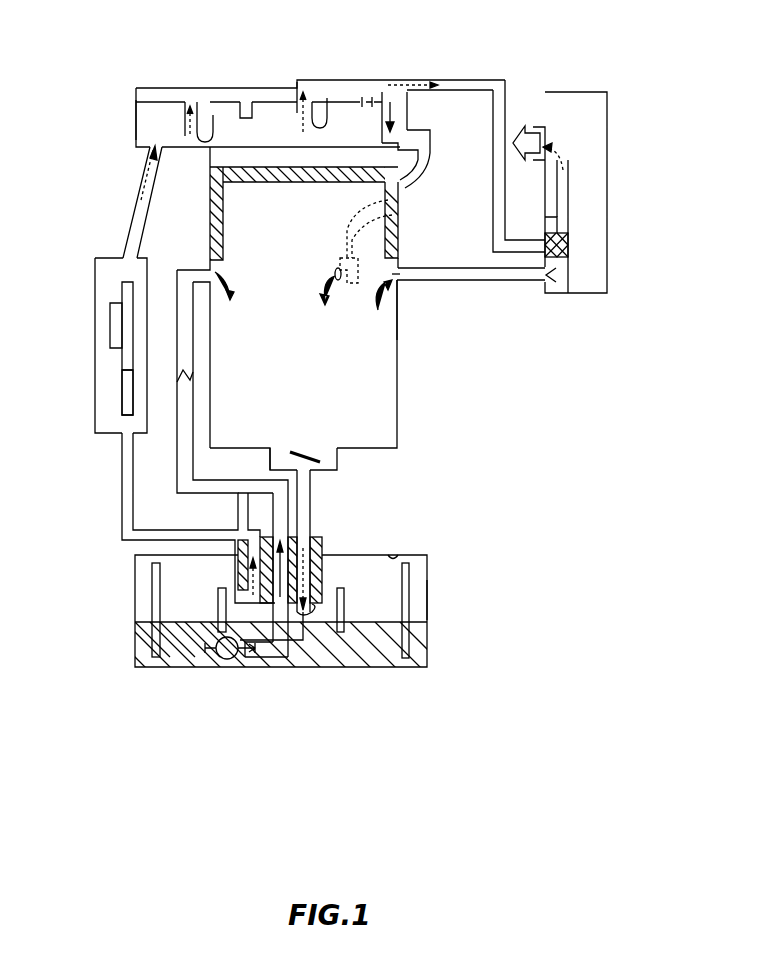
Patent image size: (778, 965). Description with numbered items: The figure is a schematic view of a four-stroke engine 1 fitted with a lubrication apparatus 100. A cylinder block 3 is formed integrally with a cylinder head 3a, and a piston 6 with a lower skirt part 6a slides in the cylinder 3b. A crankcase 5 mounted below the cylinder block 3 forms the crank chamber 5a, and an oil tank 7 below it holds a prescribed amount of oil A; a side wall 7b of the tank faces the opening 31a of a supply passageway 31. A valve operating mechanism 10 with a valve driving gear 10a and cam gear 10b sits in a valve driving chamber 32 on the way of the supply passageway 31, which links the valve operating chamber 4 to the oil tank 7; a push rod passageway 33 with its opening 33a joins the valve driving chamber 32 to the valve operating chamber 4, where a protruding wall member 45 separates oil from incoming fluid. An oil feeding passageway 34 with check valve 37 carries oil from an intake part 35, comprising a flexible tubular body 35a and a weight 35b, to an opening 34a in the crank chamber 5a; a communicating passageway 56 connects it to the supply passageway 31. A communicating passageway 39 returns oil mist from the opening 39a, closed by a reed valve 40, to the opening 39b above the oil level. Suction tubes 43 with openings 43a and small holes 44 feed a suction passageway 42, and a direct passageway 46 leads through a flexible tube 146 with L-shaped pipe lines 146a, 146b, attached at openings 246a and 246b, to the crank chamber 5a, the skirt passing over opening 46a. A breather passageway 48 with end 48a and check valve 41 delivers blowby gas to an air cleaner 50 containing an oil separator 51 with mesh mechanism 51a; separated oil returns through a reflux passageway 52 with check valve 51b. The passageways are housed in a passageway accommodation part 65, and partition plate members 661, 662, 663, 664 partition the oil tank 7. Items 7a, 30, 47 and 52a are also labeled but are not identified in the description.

The four-stroke engine 1 is at (392, 50).
The cylinder block 3 is at (210, 210).
The cylinder head 3a is at (136, 106).
The cylinder 3b is at (212, 152).
The valve operating chamber 4 is at (226, 110).
The crankcase 5 is at (398, 346).
The crank chamber 5a is at (308, 355).
The piston 6 is at (329, 218).
The skirt part 6a is at (384, 268).
The oil tank 7 is at (135, 587).
The base top wall 7a is at (394, 553).
The side wall 7b is at (427, 598).
The valve operating mechanism 10 is at (110, 281).
The valve driving gear 10a is at (127, 397).
The cam gear 10b is at (113, 320).
The circulation pipe 30 is at (177, 483).
The supply passageway 31 is at (122, 489).
The opening of supply passageway 31a is at (237, 592).
The valve driving chamber 32 is at (96, 362).
The push rod passageway 33 is at (140, 190).
The opening 33a is at (152, 144).
The oil feeding passageway 34 is at (218, 480).
The opening of oil feeding passageway 34a is at (206, 272).
The intake part 35 is at (228, 668).
The tubular body 35a is at (282, 652).
The weight with intake port 35b is at (233, 660).
The check valve 37 is at (183, 372).
The communicating passageway 39 is at (311, 492).
The opening of communicating passageway 39a is at (284, 458).
The opening of communicating passageway in oil tank 39b is at (314, 606).
The reed valve 40 is at (303, 455).
The check valve 41 is at (504, 100).
The suction passageway 42 is at (280, 97).
The suction tubes 43 is at (185, 115).
The opening of suction tube 43a is at (206, 135).
The small holes 44 is at (389, 110).
The protruding wall member 45 is at (245, 102).
The direct passageway 46 is at (400, 192).
The opening 46a is at (377, 317).
The valve 47 is at (368, 112).
The breather passageway 48 is at (331, 86).
The one end of breather passageway 48a is at (320, 110).
The air cleaner 50 is at (607, 118).
The oil separator 51 is at (569, 222).
The mesh mechanism 51a is at (570, 252).
The check valve 51b is at (549, 286).
The reflux passageway 52 is at (508, 282).
The passage opening 52a is at (395, 272).
The communicating passageway 56 is at (238, 512).
The passageway accommodation part 65 is at (318, 542).
The lubrication apparatus 100 is at (458, 697).
The tube 146 is at (430, 165).
The L-shaped pipe line in cylinder head side 146a is at (418, 105).
The L-shaped pipe line in cylinder side 146b is at (394, 242).
The opening in cylinder head side 246a is at (405, 130).
The opening of direct passageway 246b is at (342, 298).
The partition plate member 661 is at (405, 660).
The partition plate member 662 is at (340, 634).
The partition plate member 663 is at (222, 634).
The partition plate member 664 is at (156, 660).
The oil A is at (427, 648).